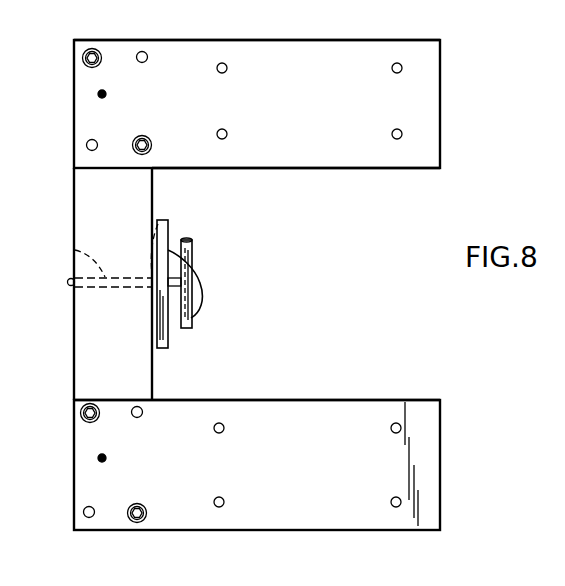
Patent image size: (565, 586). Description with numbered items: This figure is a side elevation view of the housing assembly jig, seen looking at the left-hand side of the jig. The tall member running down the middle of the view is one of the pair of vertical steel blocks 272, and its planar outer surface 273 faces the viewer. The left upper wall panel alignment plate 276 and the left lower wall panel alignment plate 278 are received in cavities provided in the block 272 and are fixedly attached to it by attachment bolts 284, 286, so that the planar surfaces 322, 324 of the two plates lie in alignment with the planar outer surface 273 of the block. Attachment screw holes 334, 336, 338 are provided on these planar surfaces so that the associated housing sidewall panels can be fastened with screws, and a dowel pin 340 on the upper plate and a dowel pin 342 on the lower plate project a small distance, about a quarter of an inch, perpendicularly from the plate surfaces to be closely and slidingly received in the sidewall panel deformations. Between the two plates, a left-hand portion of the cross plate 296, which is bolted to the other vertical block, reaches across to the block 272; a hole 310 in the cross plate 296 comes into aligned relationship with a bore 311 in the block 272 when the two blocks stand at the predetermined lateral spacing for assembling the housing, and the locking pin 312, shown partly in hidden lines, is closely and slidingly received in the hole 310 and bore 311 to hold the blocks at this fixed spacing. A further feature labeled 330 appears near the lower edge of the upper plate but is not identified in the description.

The vertical steel block 272 is at (100, 181).
The planar outer surface 273 is at (90, 212).
The left upper wall panel alignment plate 276 is at (442, 138).
The left lower wall panel alignment plate 278 is at (442, 443).
The attachment bolt 284 is at (83, 60).
The attachment bolt 286 is at (135, 141).
The cross plate 296 is at (160, 221).
The hole 310 is at (168, 231).
The bore 311 is at (75, 251).
The locking pin 312 is at (67, 286).
The planar surface 322 is at (283, 54).
The planar surface 324 is at (242, 418).
The upper plate bottom edge 330 is at (267, 158).
The attachment screw hole 334 is at (142, 51).
The attachment screw hole 336 is at (222, 62).
The attachment screw hole 338 is at (397, 62).
The dowel pin 340 is at (99, 95).
The dowel pin 342 is at (99, 458).